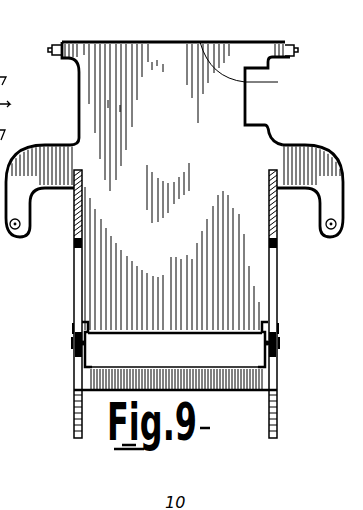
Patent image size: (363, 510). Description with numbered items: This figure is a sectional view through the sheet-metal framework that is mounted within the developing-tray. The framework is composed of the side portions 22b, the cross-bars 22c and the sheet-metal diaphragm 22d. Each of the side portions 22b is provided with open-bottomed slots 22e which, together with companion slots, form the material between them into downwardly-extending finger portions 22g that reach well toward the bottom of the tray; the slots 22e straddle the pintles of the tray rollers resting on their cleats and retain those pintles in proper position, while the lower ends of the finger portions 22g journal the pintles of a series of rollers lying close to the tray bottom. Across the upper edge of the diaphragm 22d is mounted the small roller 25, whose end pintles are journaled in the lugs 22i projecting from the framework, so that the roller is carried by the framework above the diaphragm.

The open-bottomed slots 22e is at (294, 52).
The small roller 25 is at (250, 93).
The lugs 22i is at (68, 60).
The side portions 22b is at (74, 290).
The sheet-metal diaphragm 22d is at (167, 322).
The cross-bars 22c is at (256, 391).
The finger portions 22g is at (74, 412).